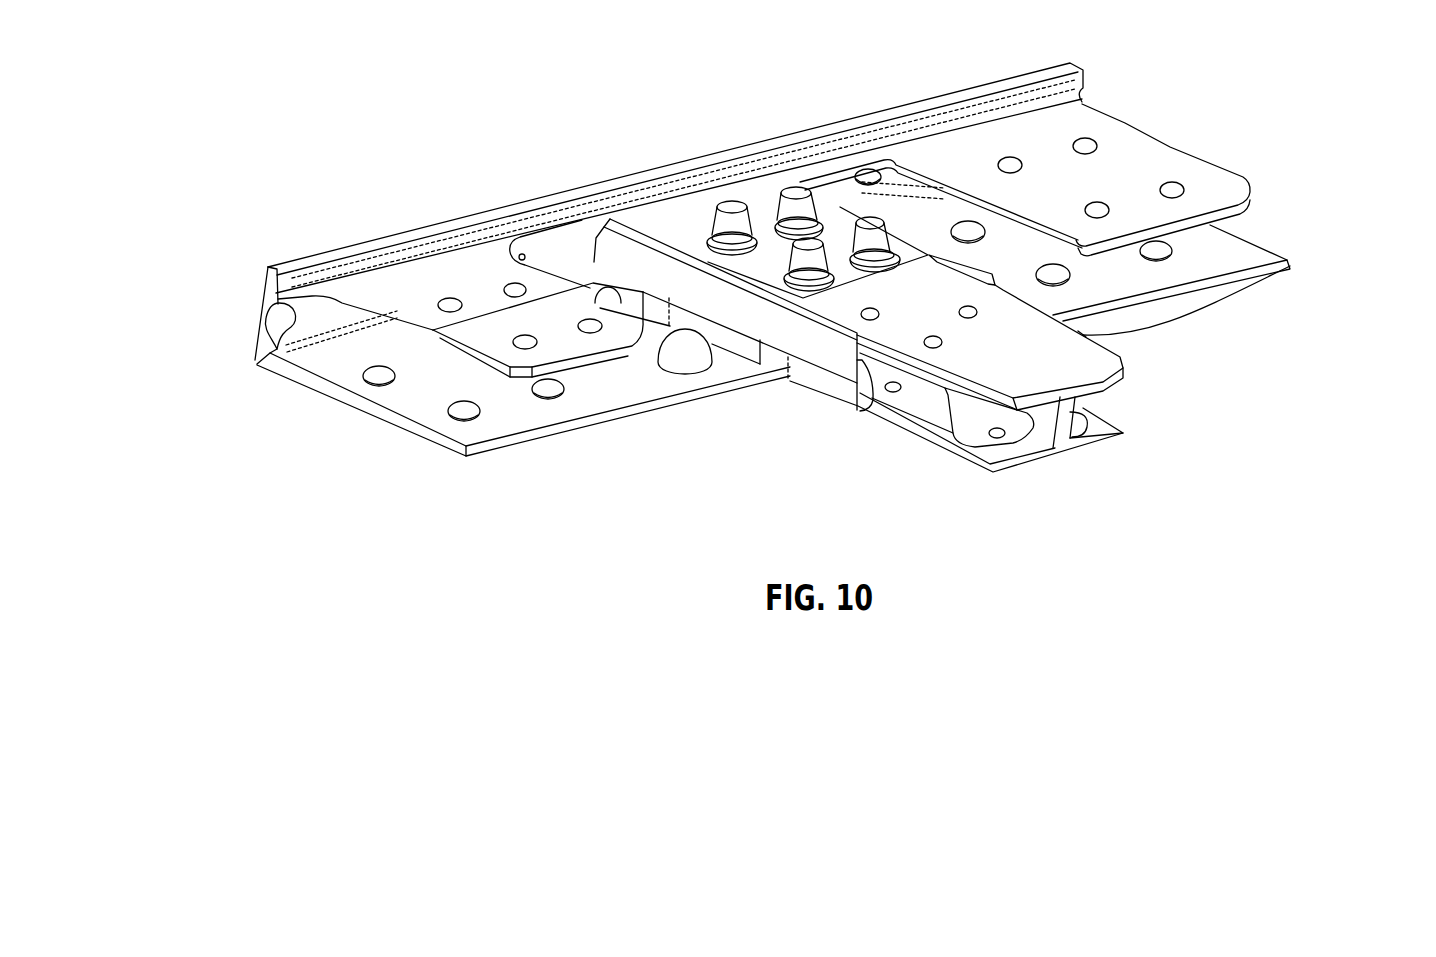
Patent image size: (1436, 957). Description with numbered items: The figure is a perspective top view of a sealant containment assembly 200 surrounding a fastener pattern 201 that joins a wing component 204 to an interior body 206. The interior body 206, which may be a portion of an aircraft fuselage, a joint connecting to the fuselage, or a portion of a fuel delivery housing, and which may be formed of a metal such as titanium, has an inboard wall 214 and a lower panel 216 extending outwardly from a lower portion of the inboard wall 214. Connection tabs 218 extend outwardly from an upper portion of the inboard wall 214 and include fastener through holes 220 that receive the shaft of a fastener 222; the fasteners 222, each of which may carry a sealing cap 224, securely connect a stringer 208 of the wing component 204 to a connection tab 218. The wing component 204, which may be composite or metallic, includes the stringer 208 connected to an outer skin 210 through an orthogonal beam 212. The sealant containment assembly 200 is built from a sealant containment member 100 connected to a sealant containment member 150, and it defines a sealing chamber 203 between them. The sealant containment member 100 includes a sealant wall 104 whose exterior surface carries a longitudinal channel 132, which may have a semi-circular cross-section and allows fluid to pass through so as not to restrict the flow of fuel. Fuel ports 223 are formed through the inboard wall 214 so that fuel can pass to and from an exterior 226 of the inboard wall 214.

The sealant containment member 100 is at (988, 266).
The sealant wall 104 is at (600, 255).
The longitudinal channel 132 is at (578, 290).
The sealant containment member 150 is at (637, 240).
The sealant containment assembly 200 is at (815, 402).
The fastener pattern 201 is at (765, 230).
The sealing chamber 203 is at (713, 263).
The wing component 204 is at (1125, 358).
The interior body 206 is at (357, 247).
The stringer 208 is at (1290, 259).
The outer skin 210 is at (1013, 466).
The orthogonal beam 212 is at (1085, 401).
The inboard wall 214 is at (268, 295).
The lower panel 216 is at (488, 447).
The connection tabs 218 is at (450, 297).
The fastener through holes 220 is at (422, 280).
The fastener 222 is at (732, 202).
The fuel ports 223 is at (273, 340).
The sealing cap 224 is at (792, 186).
The exterior 226 is at (323, 355).